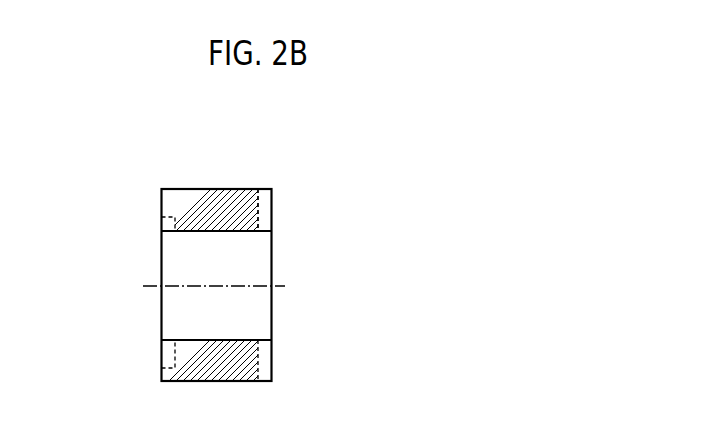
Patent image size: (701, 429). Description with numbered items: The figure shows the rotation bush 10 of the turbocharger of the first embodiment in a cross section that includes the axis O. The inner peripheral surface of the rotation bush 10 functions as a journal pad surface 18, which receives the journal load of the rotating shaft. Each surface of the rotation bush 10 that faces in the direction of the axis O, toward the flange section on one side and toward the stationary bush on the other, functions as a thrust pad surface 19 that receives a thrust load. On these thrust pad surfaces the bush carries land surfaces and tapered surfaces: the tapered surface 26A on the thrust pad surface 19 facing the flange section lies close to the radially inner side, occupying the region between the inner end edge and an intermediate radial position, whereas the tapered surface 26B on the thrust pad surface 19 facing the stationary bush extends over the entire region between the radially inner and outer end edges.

The rotation bush 10 is at (236, 175).
The journal pad surface 18 is at (247, 340).
The thrust pad surface 19 is at (272, 213).
The tapered surface 26A is at (162, 217).
The tapered surface 26B is at (258, 190).
The axis O is at (285, 286).